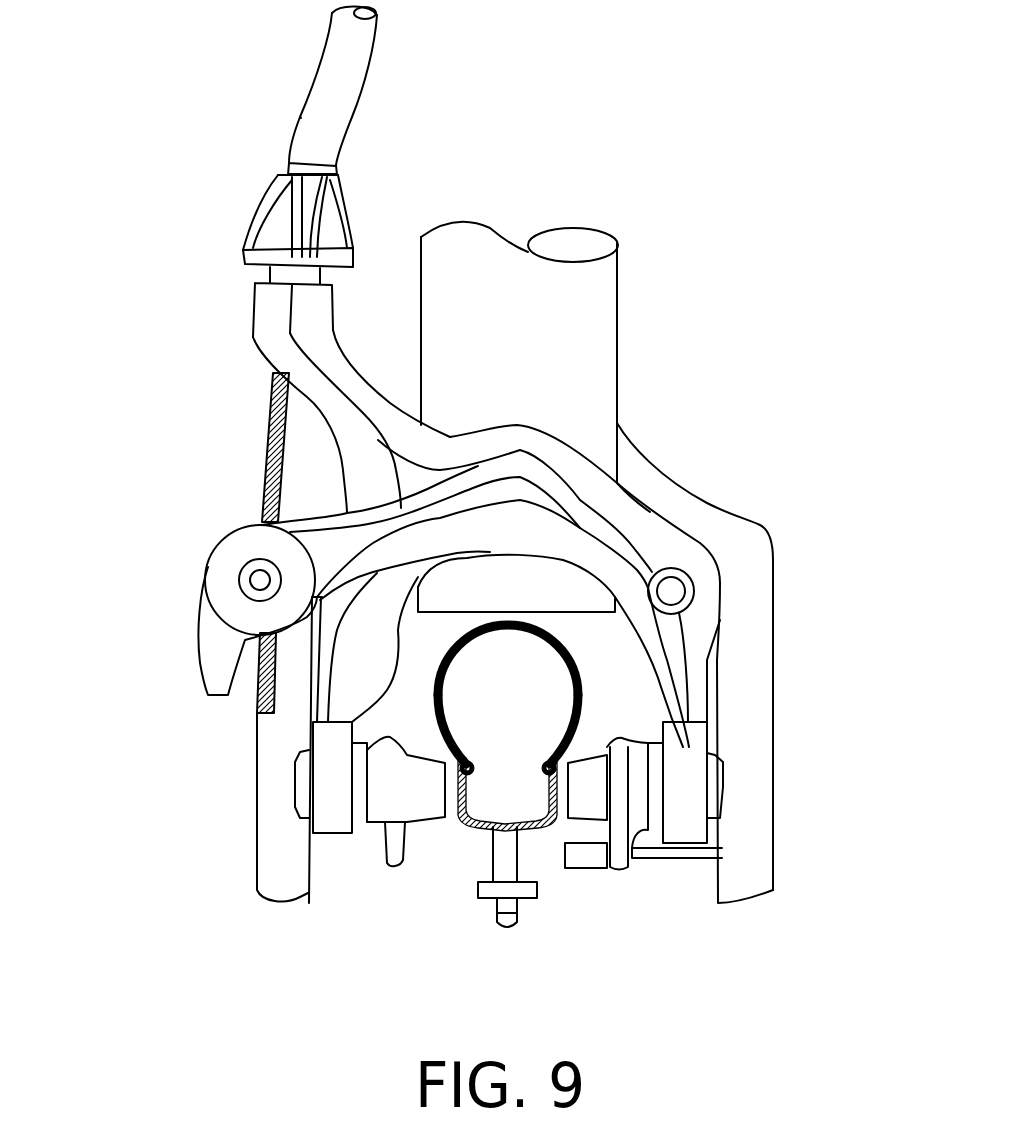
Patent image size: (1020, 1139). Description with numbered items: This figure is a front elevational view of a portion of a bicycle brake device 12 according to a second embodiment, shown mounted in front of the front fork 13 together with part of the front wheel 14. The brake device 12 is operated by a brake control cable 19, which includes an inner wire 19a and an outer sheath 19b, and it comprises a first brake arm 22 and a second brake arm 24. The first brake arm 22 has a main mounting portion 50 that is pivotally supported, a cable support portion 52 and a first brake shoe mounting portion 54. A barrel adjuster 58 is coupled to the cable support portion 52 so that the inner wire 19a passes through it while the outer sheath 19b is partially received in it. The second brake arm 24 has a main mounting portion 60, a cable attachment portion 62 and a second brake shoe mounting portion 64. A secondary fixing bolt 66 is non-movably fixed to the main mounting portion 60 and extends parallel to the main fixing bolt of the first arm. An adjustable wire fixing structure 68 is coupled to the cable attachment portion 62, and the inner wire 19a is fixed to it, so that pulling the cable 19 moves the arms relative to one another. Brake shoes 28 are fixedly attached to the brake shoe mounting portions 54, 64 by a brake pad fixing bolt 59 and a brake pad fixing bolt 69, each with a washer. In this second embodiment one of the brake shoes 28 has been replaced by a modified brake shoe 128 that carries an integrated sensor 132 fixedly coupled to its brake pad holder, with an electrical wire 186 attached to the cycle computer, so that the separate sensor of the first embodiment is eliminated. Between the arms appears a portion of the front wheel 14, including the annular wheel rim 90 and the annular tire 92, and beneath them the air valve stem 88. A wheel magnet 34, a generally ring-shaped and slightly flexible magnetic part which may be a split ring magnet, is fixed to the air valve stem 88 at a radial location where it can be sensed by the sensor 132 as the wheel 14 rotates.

The bicycle brake device 12 is at (692, 432).
The front fork 13 is at (791, 589).
The front wheel 14 is at (643, 717).
The brake control cable 19 is at (360, 139).
The inner wire 19a is at (262, 433).
The outer sheath 19b is at (358, 65).
The first brake arm 22 is at (299, 726).
The second brake arm 24 is at (719, 675).
The brake shoes 28 is at (403, 870).
The wheel magnet 34 is at (532, 900).
The main mounting portion 50 is at (487, 430).
The cable support portion 52 is at (255, 322).
The first brake shoe mounting portion 54 is at (332, 837).
The barrel adjuster 58 is at (364, 203).
The brake pad fixing bolt 59 is at (292, 790).
The main mounting portion 60 is at (617, 485).
The cable attachment portion 62 is at (208, 555).
The second brake shoe mounting portion 64 is at (705, 752).
The secondary fixing bolt 66 is at (695, 577).
The adjustable wire fixing structure 68 is at (172, 626).
The brake pad fixing bolt 69 is at (723, 797).
The air valve stem 88 is at (493, 920).
The annular wheel rim 90 is at (480, 822).
The annular tire 92 is at (608, 703).
The modified brake shoe 128 is at (618, 853).
The sensor 132 is at (585, 860).
The electrical wire 186 is at (670, 860).